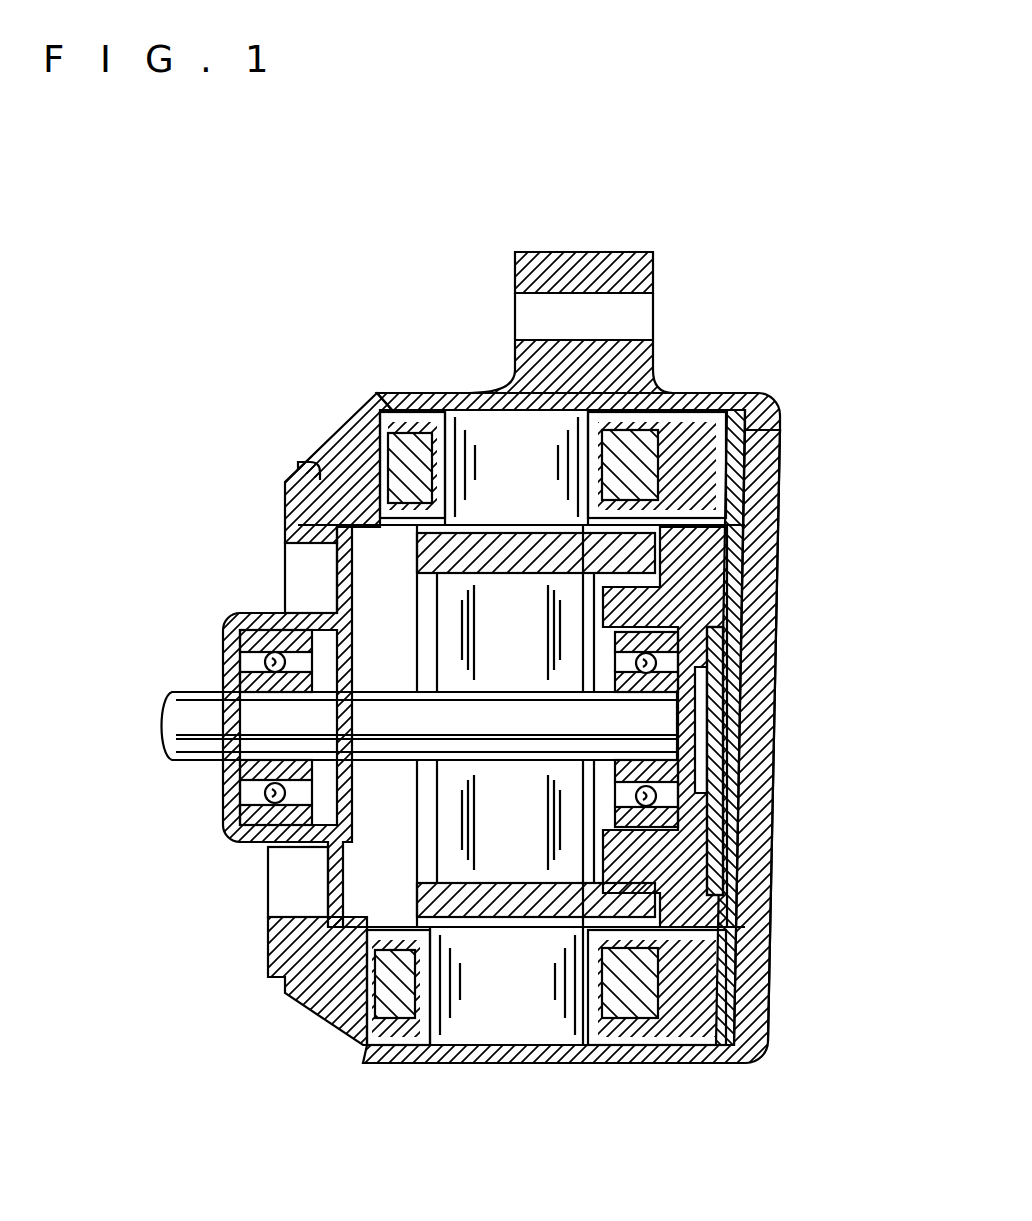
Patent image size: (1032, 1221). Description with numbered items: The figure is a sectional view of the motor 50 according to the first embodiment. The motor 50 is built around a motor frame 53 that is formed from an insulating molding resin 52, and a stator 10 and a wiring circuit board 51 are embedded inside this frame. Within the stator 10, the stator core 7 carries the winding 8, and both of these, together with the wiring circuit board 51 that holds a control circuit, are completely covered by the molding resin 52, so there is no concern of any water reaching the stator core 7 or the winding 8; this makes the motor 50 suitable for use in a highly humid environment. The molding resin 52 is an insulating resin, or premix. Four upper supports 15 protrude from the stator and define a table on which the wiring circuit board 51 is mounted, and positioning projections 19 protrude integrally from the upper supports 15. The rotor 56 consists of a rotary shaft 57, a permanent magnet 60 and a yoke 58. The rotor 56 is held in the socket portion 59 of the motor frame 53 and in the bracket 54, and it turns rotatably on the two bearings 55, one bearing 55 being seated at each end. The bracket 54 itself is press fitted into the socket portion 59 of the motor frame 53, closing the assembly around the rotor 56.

The stator core 7 is at (483, 420).
The winding 8 is at (415, 445).
The stator 10 is at (765, 380).
The upper supports 15 is at (718, 423).
The positioning projections 19 is at (738, 1052).
The motor 50 is at (597, 243).
The wiring circuit board 51 is at (730, 870).
The insulating molding resin 52 is at (320, 995).
The motor frame 53 is at (785, 408).
The bracket 54 is at (258, 628).
The bearings 55 is at (240, 648).
The rotor 56 is at (455, 830).
The rotary shaft 57 is at (200, 738).
The yoke 58 is at (290, 478).
The socket portion 59 is at (460, 602).
The permanent magnet 60 is at (430, 895).